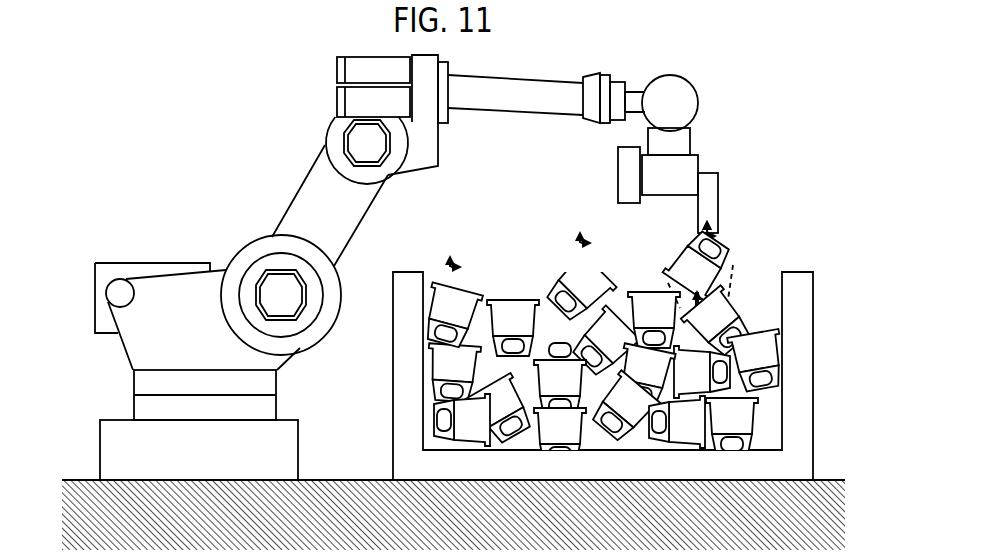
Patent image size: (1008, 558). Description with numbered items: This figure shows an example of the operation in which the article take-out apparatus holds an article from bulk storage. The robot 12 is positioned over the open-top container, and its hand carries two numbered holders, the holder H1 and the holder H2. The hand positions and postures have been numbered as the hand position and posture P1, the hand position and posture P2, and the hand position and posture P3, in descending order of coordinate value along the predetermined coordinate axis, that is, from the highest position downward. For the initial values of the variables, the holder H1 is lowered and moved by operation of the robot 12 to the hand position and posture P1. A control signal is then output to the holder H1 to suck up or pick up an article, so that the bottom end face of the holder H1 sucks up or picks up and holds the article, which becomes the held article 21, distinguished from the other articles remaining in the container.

The robot 12 is at (309, 173).
The held article 21 is at (732, 253).
The holder H1 is at (719, 190).
The holder H2 is at (618, 192).
The hand position and posture P1 is at (718, 233).
The hand position and posture P2 is at (597, 245).
The hand position and posture P3 is at (447, 263).